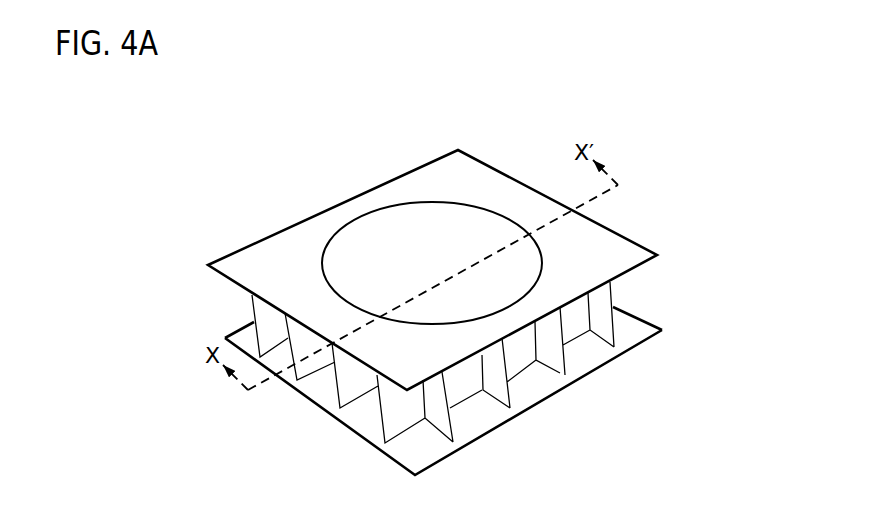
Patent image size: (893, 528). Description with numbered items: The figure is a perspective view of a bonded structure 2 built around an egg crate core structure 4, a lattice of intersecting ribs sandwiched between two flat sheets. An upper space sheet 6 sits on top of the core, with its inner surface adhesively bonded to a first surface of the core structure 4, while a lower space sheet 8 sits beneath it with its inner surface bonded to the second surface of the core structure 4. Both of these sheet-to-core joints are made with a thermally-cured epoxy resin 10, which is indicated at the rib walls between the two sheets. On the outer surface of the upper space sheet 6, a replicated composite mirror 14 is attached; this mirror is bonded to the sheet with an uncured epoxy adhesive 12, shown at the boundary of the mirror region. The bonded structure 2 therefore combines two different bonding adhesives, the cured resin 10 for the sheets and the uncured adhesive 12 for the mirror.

The bonded structure 2 is at (424, 303).
The egg crate core structure 4 is at (374, 399).
The upper space sheet 6 is at (590, 238).
The lower space sheet 8 is at (415, 452).
The thermally-cured epoxy resin 10 is at (617, 430).
The uncured epoxy adhesive 12 is at (380, 212).
The replicated composite mirror 14 is at (465, 227).